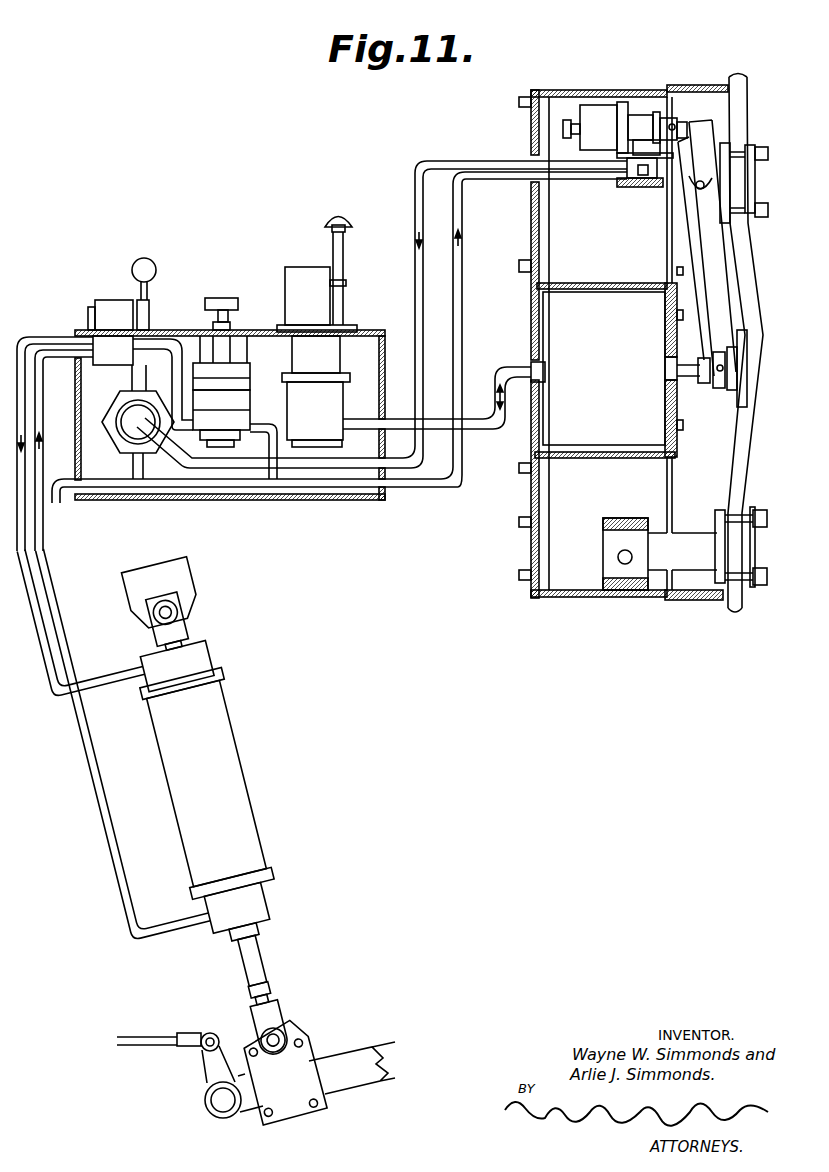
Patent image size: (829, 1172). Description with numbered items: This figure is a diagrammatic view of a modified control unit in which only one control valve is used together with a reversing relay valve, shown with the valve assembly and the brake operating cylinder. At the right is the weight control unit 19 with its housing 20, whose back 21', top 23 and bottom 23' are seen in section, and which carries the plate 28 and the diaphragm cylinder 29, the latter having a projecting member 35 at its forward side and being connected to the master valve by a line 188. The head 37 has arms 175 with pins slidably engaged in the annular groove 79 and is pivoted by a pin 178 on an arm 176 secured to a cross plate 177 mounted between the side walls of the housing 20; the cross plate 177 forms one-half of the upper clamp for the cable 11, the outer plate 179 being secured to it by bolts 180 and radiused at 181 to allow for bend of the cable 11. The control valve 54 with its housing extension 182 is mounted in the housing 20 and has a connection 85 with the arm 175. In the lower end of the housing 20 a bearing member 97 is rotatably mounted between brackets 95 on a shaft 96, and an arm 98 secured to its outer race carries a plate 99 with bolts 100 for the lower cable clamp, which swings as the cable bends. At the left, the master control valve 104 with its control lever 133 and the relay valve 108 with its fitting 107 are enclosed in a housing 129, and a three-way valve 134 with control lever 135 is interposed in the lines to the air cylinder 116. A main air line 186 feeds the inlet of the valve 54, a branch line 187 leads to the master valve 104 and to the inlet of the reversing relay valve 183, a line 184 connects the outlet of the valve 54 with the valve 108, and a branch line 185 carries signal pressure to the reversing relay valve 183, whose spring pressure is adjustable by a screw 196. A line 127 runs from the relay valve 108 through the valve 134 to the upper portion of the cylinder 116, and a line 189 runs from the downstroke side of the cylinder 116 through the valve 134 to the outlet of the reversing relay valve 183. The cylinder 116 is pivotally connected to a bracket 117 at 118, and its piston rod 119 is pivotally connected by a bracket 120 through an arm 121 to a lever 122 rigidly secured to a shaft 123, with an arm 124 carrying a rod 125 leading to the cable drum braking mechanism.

The cable 11 is at (737, 90).
The weight control unit 19 is at (532, 598).
The housing 20 is at (678, 88).
The back 21' is at (520, 344).
The top 23 is at (604, 76).
The bottom 23' is at (679, 607).
The plate 28 is at (672, 343).
The diaphragm cylinder 29 is at (652, 428).
The shaft 35 is at (690, 375).
The head 37 is at (743, 363).
The control valve 54 is at (587, 118).
The annular groove 79 is at (723, 387).
The coupling 85 is at (687, 125).
The brackets 95 is at (607, 530).
The shaft 96 is at (622, 558).
The bearing member 97 is at (652, 558).
The arm 98 is at (690, 535).
The plate 99 is at (720, 538).
The bolts 100 is at (758, 518).
The master control valve 104 is at (323, 298).
The nipple 107 is at (141, 476).
The relay valve 108 is at (127, 415).
The air cylinder 116 is at (228, 730).
The bracket 117 is at (185, 583).
The pivotal connection 118 is at (170, 614).
The piston rod 119 is at (256, 960).
The bracket 120 is at (277, 1024).
The arm 121 is at (302, 1057).
The lever 122 is at (358, 1071).
The shaft 123 is at (225, 1100).
The arm 124 is at (215, 1067).
The rod 125 is at (157, 1038).
The line 127 is at (30, 580).
The housing 129 is at (381, 500).
The control lever 133 is at (345, 255).
The three-way valve 134 is at (112, 300).
The control lever 135 is at (150, 268).
The arms 175 is at (707, 240).
The arm 176 is at (713, 183).
The cross plate 177 is at (733, 140).
The pin 178 is at (693, 187).
The outer plate 179 is at (750, 181).
The bolts 180 is at (765, 219).
The radiused portion 181 is at (747, 195).
The housing extension 182 is at (627, 173).
The reversing relay valve 183 is at (246, 376).
The line 184 is at (418, 283).
The branch line 185 is at (213, 417).
The main air line 186 is at (462, 307).
The branch line 187 is at (270, 475).
The line 188 is at (477, 428).
The line 189 is at (167, 350).
The screw 196 is at (228, 307).